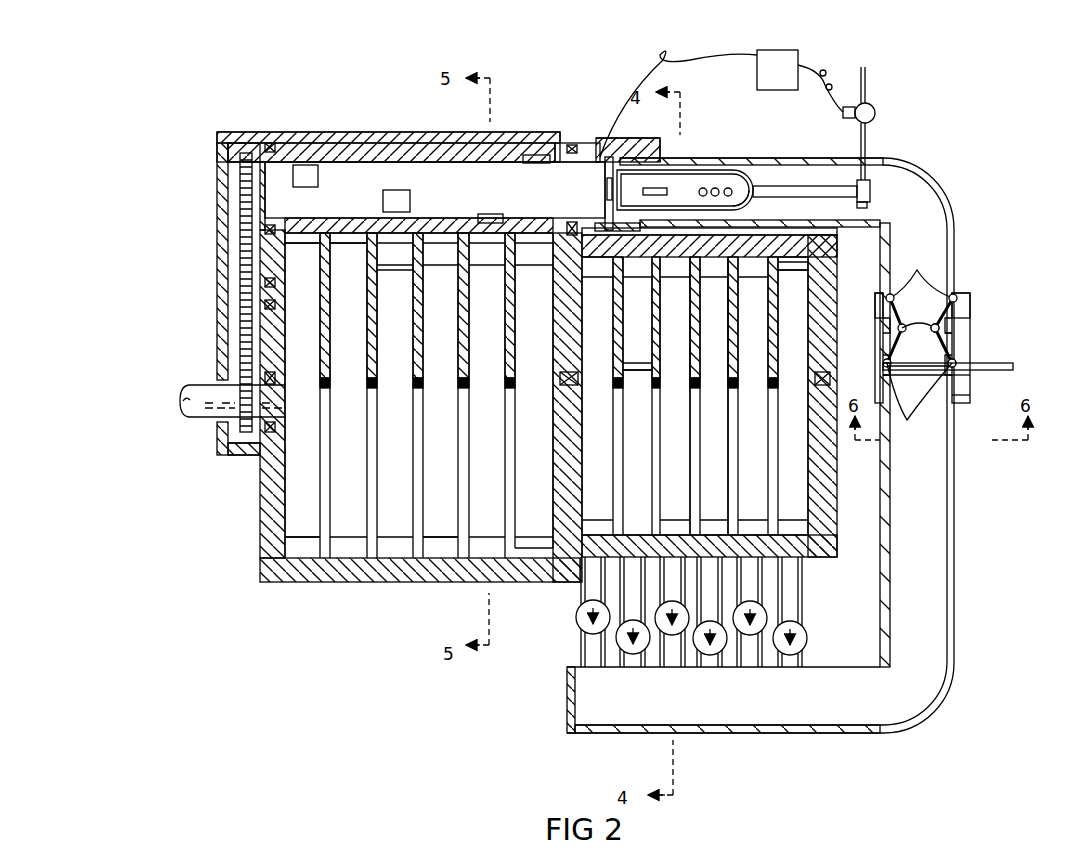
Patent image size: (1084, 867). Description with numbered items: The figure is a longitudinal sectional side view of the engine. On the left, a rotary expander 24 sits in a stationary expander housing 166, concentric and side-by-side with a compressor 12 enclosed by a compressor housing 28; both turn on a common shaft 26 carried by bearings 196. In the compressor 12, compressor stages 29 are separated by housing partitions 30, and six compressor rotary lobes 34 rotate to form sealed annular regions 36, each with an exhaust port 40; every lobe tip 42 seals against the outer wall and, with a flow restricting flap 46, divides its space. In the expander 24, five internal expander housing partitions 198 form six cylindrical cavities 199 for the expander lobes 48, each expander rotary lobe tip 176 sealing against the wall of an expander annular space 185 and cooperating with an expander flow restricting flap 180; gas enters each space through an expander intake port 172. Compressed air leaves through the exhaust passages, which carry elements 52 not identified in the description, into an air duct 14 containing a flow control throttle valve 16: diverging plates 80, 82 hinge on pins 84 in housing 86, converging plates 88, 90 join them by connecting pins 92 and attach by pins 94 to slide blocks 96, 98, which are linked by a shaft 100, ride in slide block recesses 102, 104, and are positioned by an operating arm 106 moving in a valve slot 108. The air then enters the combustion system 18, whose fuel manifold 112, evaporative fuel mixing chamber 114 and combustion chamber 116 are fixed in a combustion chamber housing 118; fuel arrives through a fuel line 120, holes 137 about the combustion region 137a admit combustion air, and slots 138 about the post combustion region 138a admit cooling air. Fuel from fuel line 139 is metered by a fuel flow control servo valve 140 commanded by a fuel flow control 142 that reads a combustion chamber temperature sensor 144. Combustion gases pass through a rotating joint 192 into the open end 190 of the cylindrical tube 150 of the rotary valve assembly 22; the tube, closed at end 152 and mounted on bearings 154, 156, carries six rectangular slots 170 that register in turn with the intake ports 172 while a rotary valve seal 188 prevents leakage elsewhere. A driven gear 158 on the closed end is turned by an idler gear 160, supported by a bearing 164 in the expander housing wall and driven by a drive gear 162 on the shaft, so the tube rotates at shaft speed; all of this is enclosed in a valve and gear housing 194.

The compressor 12 is at (860, 498).
The air duct 14 is at (810, 733).
The flow control throttle valve 16 is at (985, 300).
The combustion system 18 is at (763, 150).
The rotary valve assembly 22 is at (372, 130).
The rotary expander 24 is at (290, 590).
The common shaft 26 is at (188, 385).
The compressor housing 28 is at (830, 235).
The compressor stage 29 is at (822, 478).
The housing partition 30 is at (745, 358).
The compressor rotary lobe 34 is at (700, 395).
The sealed annular region 36 is at (640, 275).
The exhaust port 40 is at (600, 570).
The compressor rotary lobe tip 42 is at (648, 370).
The flow restricting flap 46 is at (800, 505).
The expander rotary lobe 48 is at (340, 312).
The check valve 52 is at (640, 655).
The diverging plate 80 is at (880, 300).
The diverging plate 82 is at (940, 320).
The pin 84 is at (919, 280).
The housing of valve assembly 86 is at (965, 300).
The converging plate 88 is at (895, 325).
The converging plate 90 is at (950, 333).
The connecting pin 92 is at (945, 320).
The pin 94 is at (907, 400).
The slide block 96 is at (884, 370).
The slide block 98 is at (960, 360).
The connecting shaft 100 is at (935, 366).
The slide block recess 102 is at (890, 380).
The slide block recess 104 is at (965, 403).
The flow control operating arm 106 is at (1013, 358).
The valve slot 108 is at (972, 380).
The fuel manifold 112 is at (870, 185).
The evaporative type fuel mixing chamber 114 is at (866, 202).
The combustion chamber 116 is at (715, 168).
The combustion chamber housing 118 is at (820, 160).
The fuel line 120 is at (866, 140).
The holes 137 is at (745, 185).
The combustion region 137a is at (745, 202).
The slots 138 is at (660, 172).
The post combustion region 138a is at (655, 185).
The fuel line 139 is at (866, 70).
The fuel flow control servo valve 140 is at (876, 110).
The fuel flow control 142 is at (775, 50).
The combustion chamber temperature sensor 144 is at (605, 190).
The cylindrical tube 150 is at (285, 155).
The closed end 152 is at (260, 150).
The bearing 154 is at (272, 150).
The bearing 156 is at (562, 145).
The driven gear 158 is at (240, 160).
The idler gear 160 is at (265, 283).
The drive gear 162 is at (240, 362).
The bearing 164 is at (265, 304).
The expander housing 166 is at (275, 565).
The rectangular slot 170 is at (318, 174).
The expander intake port 172 is at (345, 228).
The expander rotary lobe tip 176 is at (400, 265).
The expander flow restricting flap 180 is at (355, 258).
The expander annular space 185 is at (350, 537).
The rotary valve seal 188 is at (425, 148).
The open end 190 is at (580, 158).
The rotating joint 192 is at (615, 225).
The valve and gear housing 194 is at (220, 133).
The bearings 196 is at (260, 445).
The internal expander housing partition 198 is at (440, 537).
The cylindrical cavity 199 is at (330, 490).